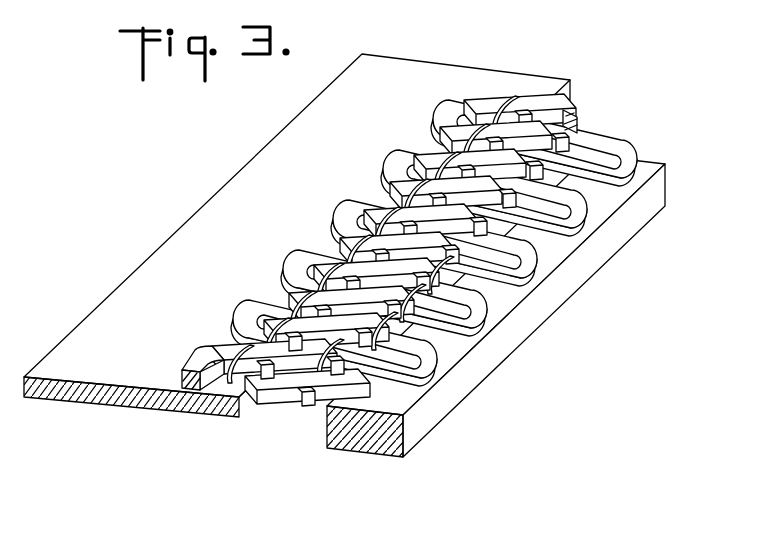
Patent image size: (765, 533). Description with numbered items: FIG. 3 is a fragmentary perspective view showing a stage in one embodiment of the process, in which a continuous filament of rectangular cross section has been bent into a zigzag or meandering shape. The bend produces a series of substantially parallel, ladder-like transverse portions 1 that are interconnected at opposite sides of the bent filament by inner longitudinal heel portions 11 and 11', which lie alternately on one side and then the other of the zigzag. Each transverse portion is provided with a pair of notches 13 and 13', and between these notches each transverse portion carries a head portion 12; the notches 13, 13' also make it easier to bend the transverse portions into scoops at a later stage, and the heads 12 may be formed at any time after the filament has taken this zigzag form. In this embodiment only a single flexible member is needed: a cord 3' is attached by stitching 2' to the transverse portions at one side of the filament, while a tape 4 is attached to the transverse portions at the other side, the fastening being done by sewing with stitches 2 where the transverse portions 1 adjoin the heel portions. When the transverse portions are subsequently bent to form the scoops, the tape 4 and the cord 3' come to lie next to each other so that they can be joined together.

The tape 4 is at (417, 72).
The transverse ladder-like portions 1 is at (573, 143).
The stitching 2' is at (549, 143).
The cord 3' is at (516, 300).
The inner longitudinal heel portion 11 is at (452, 218).
The inner longitudinal heel portion 11' is at (425, 308).
The stitches 2 is at (262, 398).
The head portions 12 is at (298, 384).
The notch 13 is at (278, 388).
The notch 13' is at (320, 400).